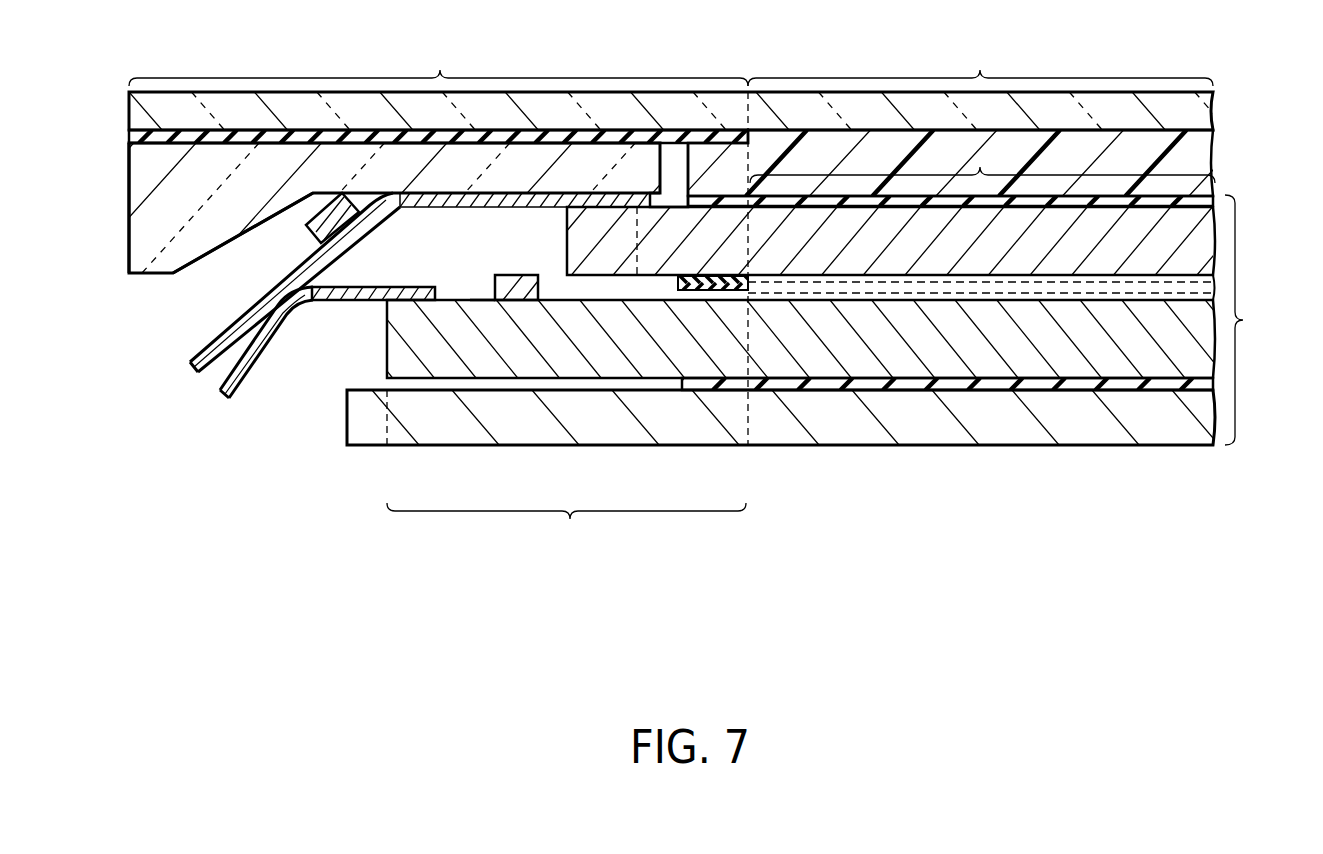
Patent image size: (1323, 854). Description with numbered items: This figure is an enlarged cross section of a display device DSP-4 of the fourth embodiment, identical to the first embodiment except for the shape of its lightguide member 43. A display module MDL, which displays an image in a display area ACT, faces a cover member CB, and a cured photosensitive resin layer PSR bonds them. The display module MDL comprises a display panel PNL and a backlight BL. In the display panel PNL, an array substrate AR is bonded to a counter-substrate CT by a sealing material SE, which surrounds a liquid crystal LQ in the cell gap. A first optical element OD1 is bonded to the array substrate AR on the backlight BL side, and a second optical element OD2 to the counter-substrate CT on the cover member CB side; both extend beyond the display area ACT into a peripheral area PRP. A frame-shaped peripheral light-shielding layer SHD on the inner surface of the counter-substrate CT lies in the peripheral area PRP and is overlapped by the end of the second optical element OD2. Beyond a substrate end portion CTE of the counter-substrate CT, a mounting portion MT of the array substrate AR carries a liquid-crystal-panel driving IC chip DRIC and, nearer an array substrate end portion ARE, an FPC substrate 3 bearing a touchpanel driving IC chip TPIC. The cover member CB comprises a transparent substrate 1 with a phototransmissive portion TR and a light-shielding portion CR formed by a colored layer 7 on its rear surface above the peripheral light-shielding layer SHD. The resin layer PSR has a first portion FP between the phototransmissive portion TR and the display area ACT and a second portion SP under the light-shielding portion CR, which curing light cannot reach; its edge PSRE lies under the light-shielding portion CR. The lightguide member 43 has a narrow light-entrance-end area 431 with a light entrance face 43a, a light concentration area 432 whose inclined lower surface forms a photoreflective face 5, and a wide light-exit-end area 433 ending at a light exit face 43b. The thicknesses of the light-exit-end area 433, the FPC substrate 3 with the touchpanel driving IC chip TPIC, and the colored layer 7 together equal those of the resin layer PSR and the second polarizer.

The transparent substrate 1 is at (1200, 112).
The FPC substrate 3 is at (263, 295).
The photoreflective face 5 is at (191, 266).
The colored layer 7 is at (212, 143).
The lightguide member 43 is at (156, 273).
The light entrance face 43a is at (128, 170).
The light exit face 43b is at (661, 157).
The light-entrance-end area 431 is at (157, 160).
The light concentration area 432 is at (267, 190).
The light-exit-end area 433 is at (530, 167).
The cover member CB is at (624, 183).
The light-shielding portion CR is at (438, 61).
The phototransmissive portion TR is at (980, 60).
The second portion SP is at (717, 177).
The first portion FP is at (890, 147).
The display area ACT is at (982, 159).
The touchpanel driving IC chip TPIC is at (312, 228).
The mounting portion MT is at (486, 272).
The liquid-crystal-panel driving IC chip DRIC is at (522, 275).
The array substrate end portion ARE is at (382, 340).
The display panel PNL is at (382, 386).
The display module MDL is at (790, 338).
The substrate end portion CTE is at (567, 258).
The edge PSRE is at (663, 176).
The peripheral light-shielding layer SHD is at (681, 290).
The sealing material SE is at (718, 290).
The array substrate AR is at (773, 358).
The liquid crystal LQ is at (820, 288).
The counter-substrate CT is at (857, 258).
The cured photosensitive resin layer PSR is at (907, 184).
The first optical element OD1 is at (963, 384).
The second optical element OD2 is at (1077, 205).
The backlight BL is at (1180, 438).
The peripheral area PRP is at (566, 527).
The display device DSP-4 is at (623, 575).